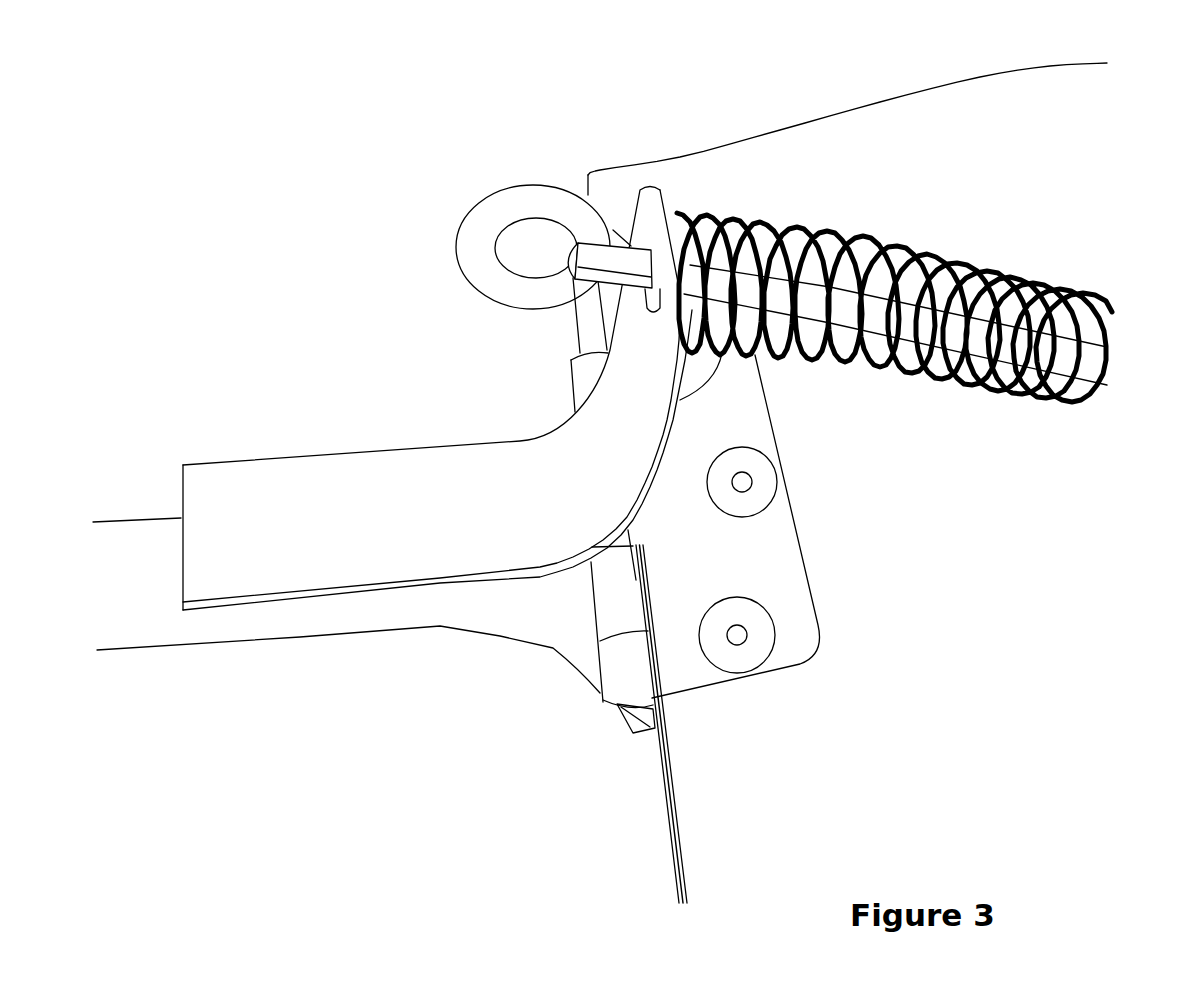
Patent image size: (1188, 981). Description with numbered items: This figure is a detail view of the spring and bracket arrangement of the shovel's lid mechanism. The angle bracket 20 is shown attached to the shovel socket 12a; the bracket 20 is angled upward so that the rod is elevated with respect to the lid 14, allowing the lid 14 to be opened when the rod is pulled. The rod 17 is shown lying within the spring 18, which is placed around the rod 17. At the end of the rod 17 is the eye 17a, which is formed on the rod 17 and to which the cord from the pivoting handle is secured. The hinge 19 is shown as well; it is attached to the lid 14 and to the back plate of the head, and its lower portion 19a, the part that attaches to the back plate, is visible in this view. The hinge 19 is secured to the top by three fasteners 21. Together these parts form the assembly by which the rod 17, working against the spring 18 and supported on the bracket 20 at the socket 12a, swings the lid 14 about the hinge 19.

The lid 14 is at (883, 122).
The shovel socket 12a is at (365, 625).
The rod 17 is at (938, 320).
The eye 17a is at (463, 240).
The spring 18 is at (1005, 282).
The hinge 19 is at (680, 628).
The lower portion of the hinge 19a is at (610, 713).
The angle bracket 20 is at (428, 478).
The fasteners 21 is at (705, 370).